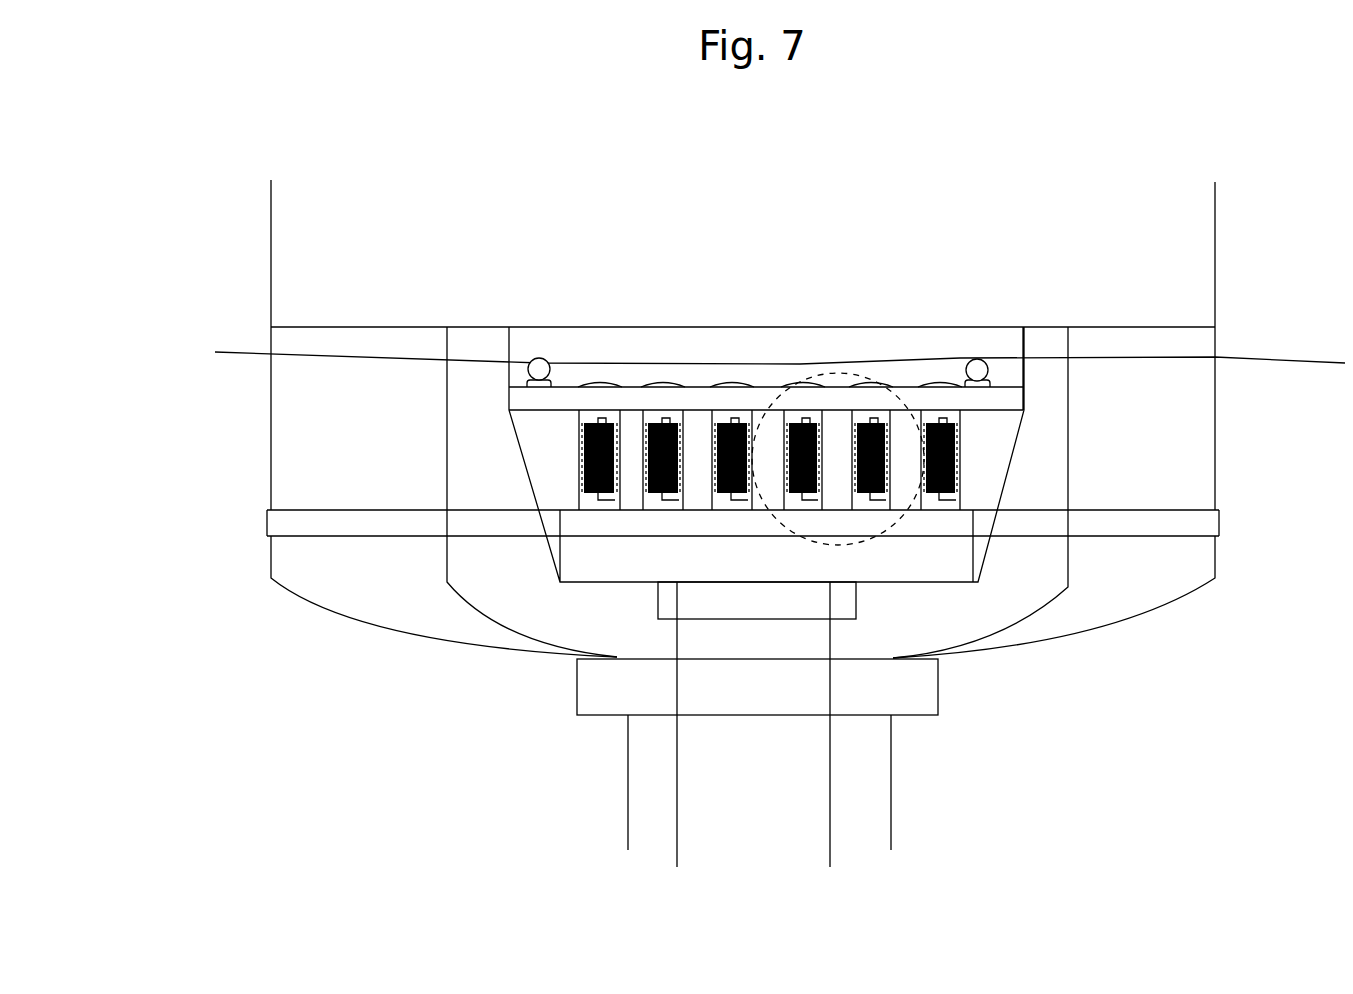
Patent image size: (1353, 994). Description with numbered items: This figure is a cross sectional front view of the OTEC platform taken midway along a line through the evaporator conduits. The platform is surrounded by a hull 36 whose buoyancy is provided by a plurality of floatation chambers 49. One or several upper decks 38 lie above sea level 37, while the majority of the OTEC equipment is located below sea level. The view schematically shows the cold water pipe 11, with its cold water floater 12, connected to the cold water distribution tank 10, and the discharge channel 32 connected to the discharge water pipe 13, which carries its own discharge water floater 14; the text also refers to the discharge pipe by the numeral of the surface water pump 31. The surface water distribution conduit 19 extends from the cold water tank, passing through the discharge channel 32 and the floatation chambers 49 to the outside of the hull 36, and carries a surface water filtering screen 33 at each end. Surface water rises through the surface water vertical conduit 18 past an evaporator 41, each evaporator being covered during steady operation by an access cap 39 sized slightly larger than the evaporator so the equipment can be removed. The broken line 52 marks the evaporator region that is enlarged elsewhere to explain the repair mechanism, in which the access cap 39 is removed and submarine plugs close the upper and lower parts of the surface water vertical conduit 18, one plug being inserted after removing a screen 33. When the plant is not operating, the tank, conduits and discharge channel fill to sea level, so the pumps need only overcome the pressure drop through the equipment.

The cold water distribution tank 10 is at (578, 560).
The cold water pipe 11 is at (713, 796).
The cold water floater 12 is at (840, 613).
The discharge water pipe 13 is at (860, 806).
The discharge water floater 14 is at (902, 693).
The surface water vertical conduit 18 is at (682, 410).
The surface water distribution conduit 19 is at (1174, 521).
The surface water pump 31 is at (977, 370).
The discharge channel 32 is at (457, 450).
The surface water filtering screen 33 is at (1220, 525).
The hull 36 is at (1217, 295).
The sea level 37 is at (232, 352).
The upper deck 38 is at (568, 327).
The access cap 39 is at (943, 382).
The evaporator 41 is at (738, 423).
The floatation chamber 49 is at (352, 412).
The broken line 52 is at (865, 372).